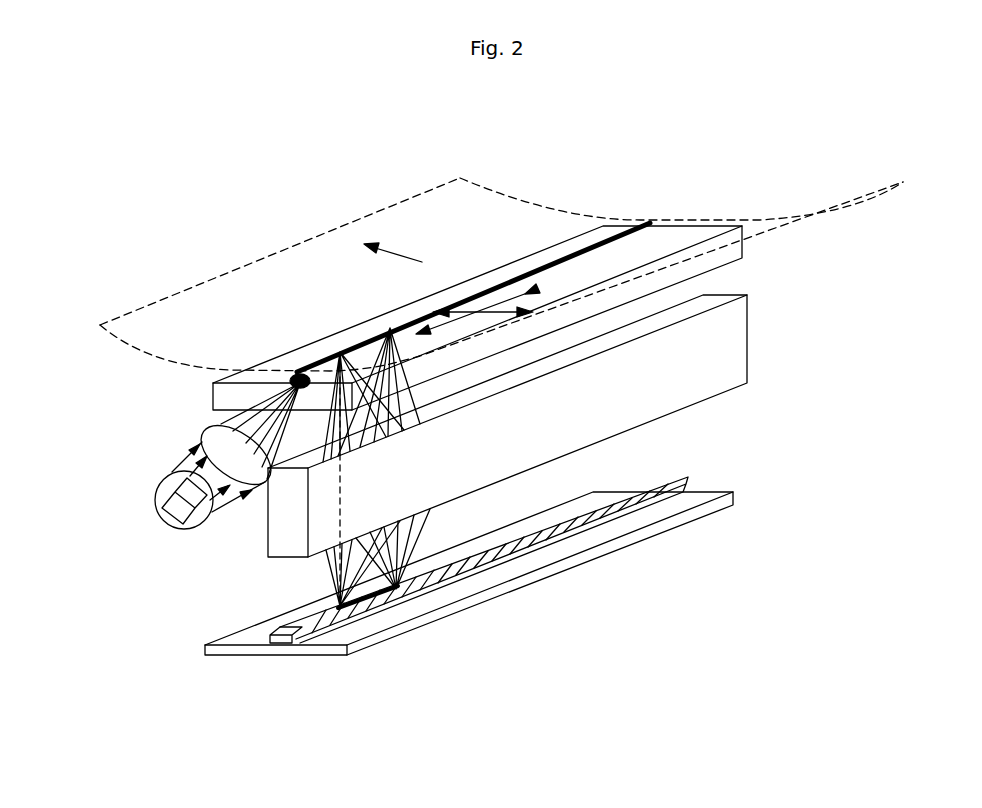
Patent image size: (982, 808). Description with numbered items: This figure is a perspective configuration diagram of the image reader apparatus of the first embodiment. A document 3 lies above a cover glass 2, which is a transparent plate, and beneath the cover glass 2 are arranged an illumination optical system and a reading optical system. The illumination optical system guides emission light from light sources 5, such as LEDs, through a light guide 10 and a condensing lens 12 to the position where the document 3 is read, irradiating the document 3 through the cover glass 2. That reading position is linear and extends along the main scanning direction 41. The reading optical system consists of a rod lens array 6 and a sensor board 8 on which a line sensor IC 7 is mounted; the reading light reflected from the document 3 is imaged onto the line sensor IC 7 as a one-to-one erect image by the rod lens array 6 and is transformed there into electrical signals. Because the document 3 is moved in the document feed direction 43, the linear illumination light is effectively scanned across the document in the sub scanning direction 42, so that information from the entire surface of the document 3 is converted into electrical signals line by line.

The cover glass 2 is at (217, 397).
The document 3 is at (327, 263).
The light sources 5 is at (162, 506).
The rod lens array 6 is at (267, 531).
The line sensor IC 7 is at (272, 628).
The sensor board 8 is at (360, 648).
The light guide 10 is at (163, 481).
The condensing lens 12 is at (210, 431).
The main scanning direction 41 is at (540, 288).
The sub scanning direction 42 is at (470, 312).
The document feed direction 43 is at (422, 262).